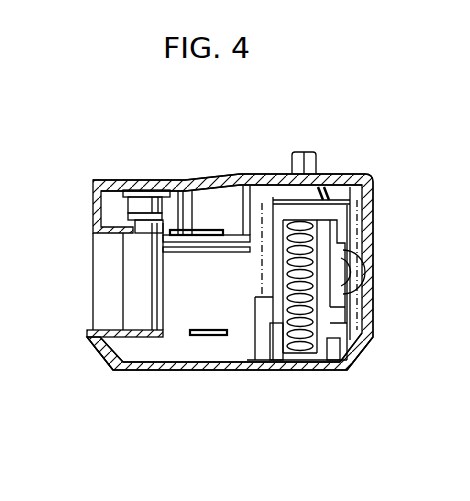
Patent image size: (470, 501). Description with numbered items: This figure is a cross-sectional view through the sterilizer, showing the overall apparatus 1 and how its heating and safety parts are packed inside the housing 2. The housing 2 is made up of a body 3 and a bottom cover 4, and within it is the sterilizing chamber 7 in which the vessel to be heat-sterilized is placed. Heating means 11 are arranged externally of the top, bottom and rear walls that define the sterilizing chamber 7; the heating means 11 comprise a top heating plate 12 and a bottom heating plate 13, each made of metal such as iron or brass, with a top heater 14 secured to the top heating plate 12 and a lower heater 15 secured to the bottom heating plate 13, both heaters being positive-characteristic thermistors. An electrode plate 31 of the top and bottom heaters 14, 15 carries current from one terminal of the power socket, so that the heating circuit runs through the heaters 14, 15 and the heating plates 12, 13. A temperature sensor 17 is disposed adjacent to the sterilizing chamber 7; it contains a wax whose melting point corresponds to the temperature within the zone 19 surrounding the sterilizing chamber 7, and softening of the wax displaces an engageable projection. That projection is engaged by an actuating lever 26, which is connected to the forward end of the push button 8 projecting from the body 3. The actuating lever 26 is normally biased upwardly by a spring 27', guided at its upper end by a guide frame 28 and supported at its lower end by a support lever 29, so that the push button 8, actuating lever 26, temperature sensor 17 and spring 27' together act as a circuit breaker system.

The electromagnetic relay 1 is at (92, 232).
The housing 2 is at (373, 198).
The body 3 is at (337, 175).
The bottom cover 4 is at (254, 372).
The sterilizing chamber 7 is at (102, 280).
The push button 8 is at (298, 152).
The heating means 11 is at (212, 118).
The top heating plate 12 is at (180, 237).
The bottom heating plate 13 is at (177, 335).
The top heater 14 is at (195, 233).
The lower heater 15 is at (171, 335).
The temperature sensor 17 is at (313, 262).
The zone 19 is at (125, 350).
The actuating lever 26 is at (330, 330).
The spring 27' is at (322, 398).
The guide frame 28 is at (343, 208).
The support lever 29 is at (363, 372).
The electrode plate 31 is at (222, 232).